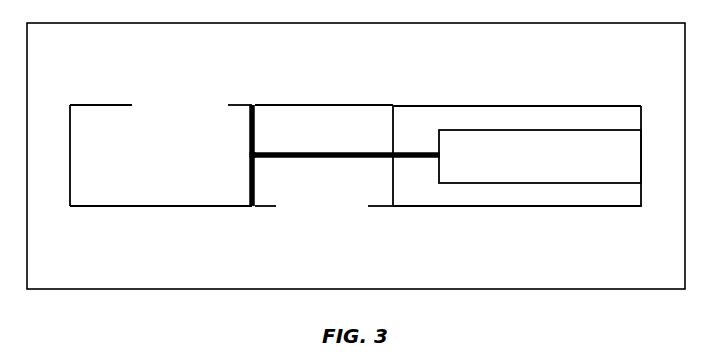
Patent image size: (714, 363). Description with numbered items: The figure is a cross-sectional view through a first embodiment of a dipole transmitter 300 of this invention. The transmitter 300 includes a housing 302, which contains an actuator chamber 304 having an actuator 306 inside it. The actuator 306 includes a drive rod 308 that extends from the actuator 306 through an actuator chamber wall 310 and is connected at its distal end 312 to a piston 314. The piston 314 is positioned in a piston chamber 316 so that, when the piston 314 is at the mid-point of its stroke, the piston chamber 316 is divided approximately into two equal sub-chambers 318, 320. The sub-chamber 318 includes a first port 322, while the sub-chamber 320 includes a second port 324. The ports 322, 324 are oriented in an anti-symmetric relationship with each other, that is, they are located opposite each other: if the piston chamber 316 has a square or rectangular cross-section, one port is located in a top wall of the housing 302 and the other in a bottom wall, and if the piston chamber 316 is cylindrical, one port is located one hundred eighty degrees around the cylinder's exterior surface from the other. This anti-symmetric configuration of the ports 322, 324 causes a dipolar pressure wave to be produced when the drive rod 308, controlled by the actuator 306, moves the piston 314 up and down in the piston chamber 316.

The dipole transmitter 300 is at (280, 80).
The housing 302 is at (448, 94).
The actuator chamber 304 is at (528, 139).
The actuator 306 is at (560, 165).
The drive rod 308 is at (346, 143).
The actuator chamber wall 310 is at (364, 156).
The distal end 312 is at (283, 171).
The piston 314 is at (221, 155).
The piston chamber 316 is at (161, 215).
The sub-chamber 318 is at (161, 158).
The sub-chamber 320 is at (308, 132).
The first port 322 is at (161, 94).
The second port 324 is at (324, 220).